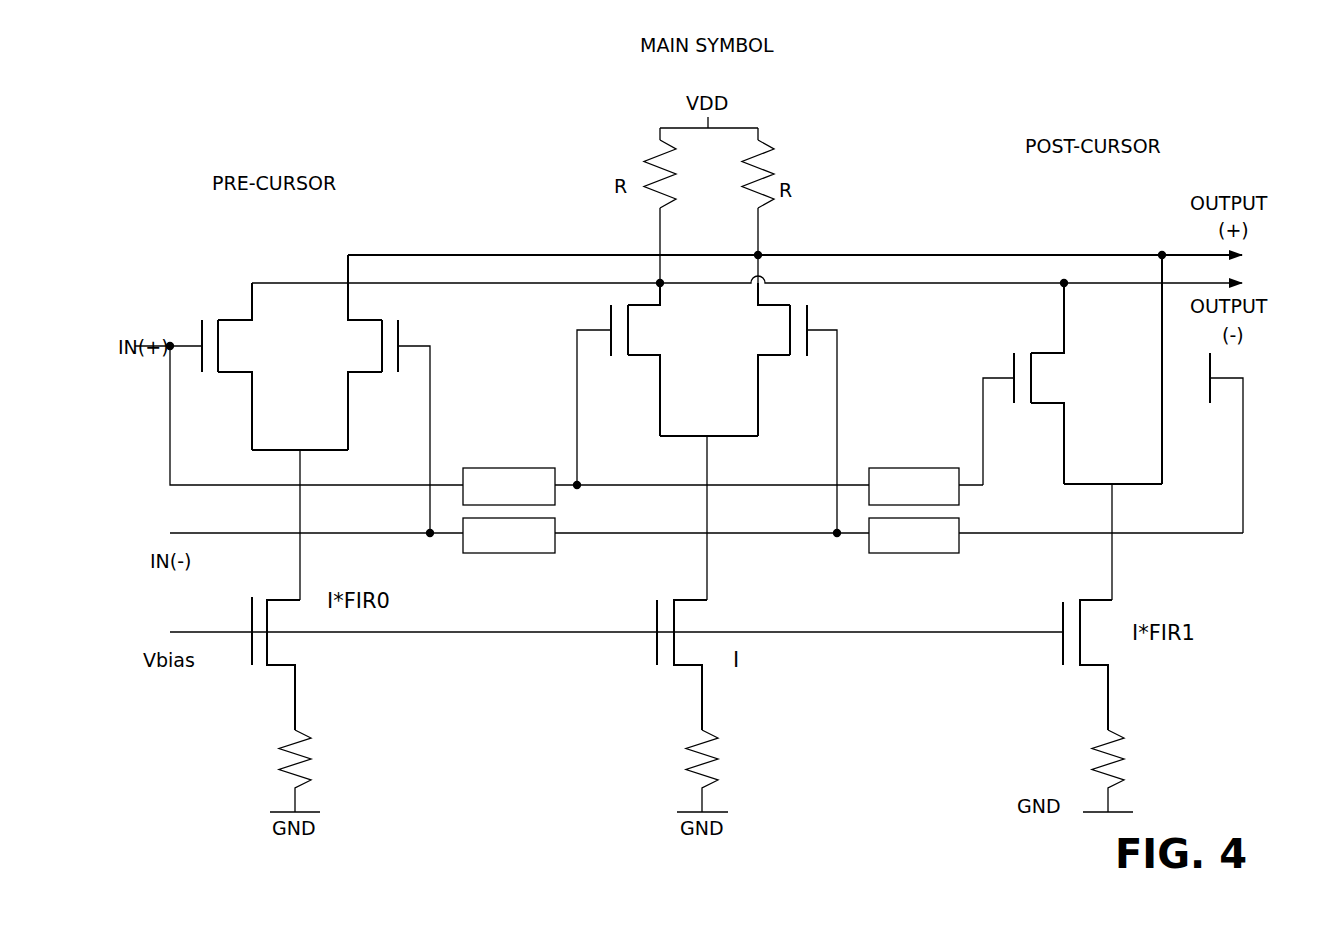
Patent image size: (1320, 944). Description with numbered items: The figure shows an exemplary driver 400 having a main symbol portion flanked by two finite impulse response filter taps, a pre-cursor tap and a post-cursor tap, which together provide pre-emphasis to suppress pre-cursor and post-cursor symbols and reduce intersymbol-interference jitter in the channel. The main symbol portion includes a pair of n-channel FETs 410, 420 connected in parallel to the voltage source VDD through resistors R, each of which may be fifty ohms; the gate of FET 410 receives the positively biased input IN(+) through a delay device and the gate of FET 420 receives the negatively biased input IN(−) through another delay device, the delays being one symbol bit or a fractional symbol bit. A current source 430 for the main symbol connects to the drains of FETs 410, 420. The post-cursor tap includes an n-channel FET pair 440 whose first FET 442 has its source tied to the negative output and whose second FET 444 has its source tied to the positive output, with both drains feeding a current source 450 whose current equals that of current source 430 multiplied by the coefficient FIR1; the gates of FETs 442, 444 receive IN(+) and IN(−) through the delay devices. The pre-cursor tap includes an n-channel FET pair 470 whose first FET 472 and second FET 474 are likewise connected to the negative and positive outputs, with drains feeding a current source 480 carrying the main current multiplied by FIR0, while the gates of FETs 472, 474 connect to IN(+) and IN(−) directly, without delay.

The driver 400 is at (218, 93).
The n-channel FET 410 is at (663, 335).
The n-channel FET 420 is at (770, 322).
The current source 430 is at (632, 658).
The n-channel FET pair 440 is at (1038, 337).
The first FET 442 is at (1067, 385).
The second FET 444 is at (1175, 372).
The current source 450 is at (1127, 658).
The n-channel FET pair 470 is at (234, 266).
The first FET 472 is at (253, 352).
The second FET 474 is at (363, 338).
The current source 480 is at (317, 657).